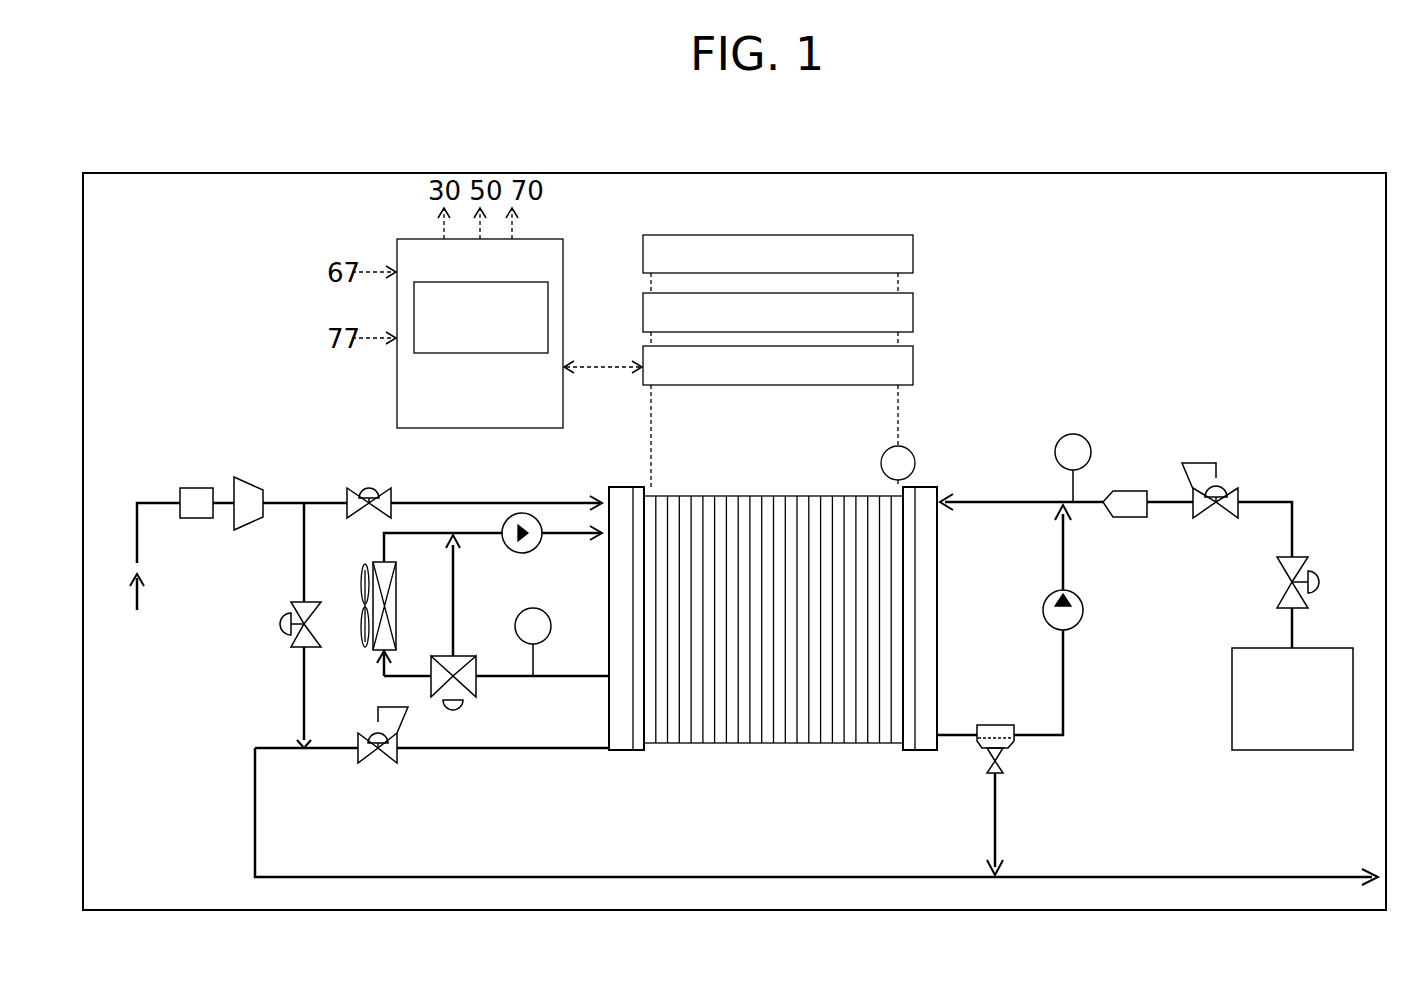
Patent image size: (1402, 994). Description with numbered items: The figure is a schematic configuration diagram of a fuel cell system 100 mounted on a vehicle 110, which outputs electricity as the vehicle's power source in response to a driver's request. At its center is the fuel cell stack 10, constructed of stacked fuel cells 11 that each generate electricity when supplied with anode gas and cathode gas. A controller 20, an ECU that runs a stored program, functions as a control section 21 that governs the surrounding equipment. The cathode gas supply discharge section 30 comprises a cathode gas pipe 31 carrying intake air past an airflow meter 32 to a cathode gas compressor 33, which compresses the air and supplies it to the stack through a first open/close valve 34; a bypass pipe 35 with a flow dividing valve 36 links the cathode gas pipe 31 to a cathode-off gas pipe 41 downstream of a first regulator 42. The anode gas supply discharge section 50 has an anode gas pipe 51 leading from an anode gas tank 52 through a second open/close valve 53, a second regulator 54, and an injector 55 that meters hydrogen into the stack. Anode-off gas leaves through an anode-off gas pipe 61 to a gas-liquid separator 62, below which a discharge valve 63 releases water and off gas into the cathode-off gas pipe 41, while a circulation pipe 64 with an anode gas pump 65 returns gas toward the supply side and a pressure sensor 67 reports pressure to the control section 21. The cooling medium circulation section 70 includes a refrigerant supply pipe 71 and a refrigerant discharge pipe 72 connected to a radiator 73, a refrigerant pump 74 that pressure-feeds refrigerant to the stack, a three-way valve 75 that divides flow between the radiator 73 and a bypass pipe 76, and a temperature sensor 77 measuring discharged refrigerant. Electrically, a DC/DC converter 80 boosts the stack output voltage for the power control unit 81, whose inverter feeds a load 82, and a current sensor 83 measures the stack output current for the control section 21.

The fuel cell stack 10 is at (773, 655).
The fuel cell 11 is at (770, 745).
The controller 20 is at (563, 275).
The control section 21 is at (487, 283).
The cathode gas supply discharge section 30 is at (170, 458).
The cathode gas pipe 31 is at (138, 557).
The airflow meter 32 is at (197, 488).
The cathode gas compressor 33 is at (248, 477).
The first open/close valve 34 is at (380, 481).
The bypass pipe 35 is at (303, 586).
The flow dividing valve 36 is at (282, 632).
The cathode-off gas pipe 41 is at (435, 750).
The first regulator 42 is at (366, 736).
The anode gas supply discharge section 50 is at (1225, 770).
The anode gas pipe 51 is at (1293, 532).
The anode gas tank 52 is at (1312, 648).
The second open/close valve 53 is at (1288, 590).
The second regulator 54 is at (1238, 490).
The injector 55 is at (1128, 491).
The anode-off gas pipe 61 is at (992, 806).
The gas-liquid separator 62 is at (1005, 750).
The discharge valve 63 is at (1003, 775).
The circulation pipe 64 is at (1064, 687).
The anode gas pump 65 is at (1042, 613).
The pressure sensor 67 is at (1088, 442).
The cooling medium circulation section 70 is at (370, 680).
The refrigerant supply pipe 71 is at (560, 535).
The refrigerant discharge pipe 72 is at (557, 676).
The radiator 73 is at (373, 570).
The refrigerant pump 74 is at (536, 547).
The three-way valve 75 is at (460, 705).
The bypass pipe 76 is at (455, 598).
The temperature sensor 77 is at (553, 627).
The DC/DC converter 80 is at (913, 362).
The power control unit 81 is at (913, 310).
The load 82 is at (913, 250).
The current sensor 83 is at (915, 463).
The fuel cell system 100 is at (1094, 262).
The vehicle 110 is at (1177, 173).